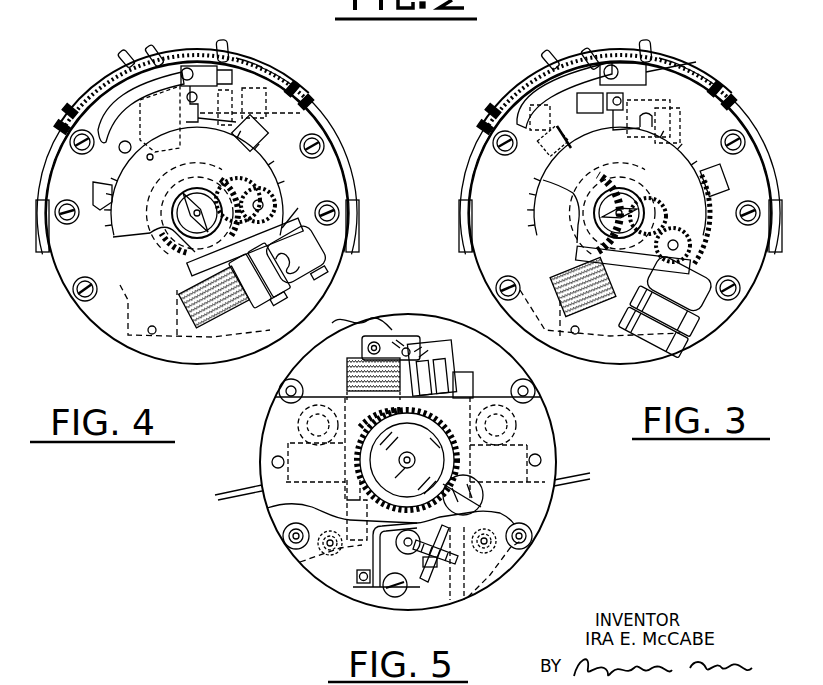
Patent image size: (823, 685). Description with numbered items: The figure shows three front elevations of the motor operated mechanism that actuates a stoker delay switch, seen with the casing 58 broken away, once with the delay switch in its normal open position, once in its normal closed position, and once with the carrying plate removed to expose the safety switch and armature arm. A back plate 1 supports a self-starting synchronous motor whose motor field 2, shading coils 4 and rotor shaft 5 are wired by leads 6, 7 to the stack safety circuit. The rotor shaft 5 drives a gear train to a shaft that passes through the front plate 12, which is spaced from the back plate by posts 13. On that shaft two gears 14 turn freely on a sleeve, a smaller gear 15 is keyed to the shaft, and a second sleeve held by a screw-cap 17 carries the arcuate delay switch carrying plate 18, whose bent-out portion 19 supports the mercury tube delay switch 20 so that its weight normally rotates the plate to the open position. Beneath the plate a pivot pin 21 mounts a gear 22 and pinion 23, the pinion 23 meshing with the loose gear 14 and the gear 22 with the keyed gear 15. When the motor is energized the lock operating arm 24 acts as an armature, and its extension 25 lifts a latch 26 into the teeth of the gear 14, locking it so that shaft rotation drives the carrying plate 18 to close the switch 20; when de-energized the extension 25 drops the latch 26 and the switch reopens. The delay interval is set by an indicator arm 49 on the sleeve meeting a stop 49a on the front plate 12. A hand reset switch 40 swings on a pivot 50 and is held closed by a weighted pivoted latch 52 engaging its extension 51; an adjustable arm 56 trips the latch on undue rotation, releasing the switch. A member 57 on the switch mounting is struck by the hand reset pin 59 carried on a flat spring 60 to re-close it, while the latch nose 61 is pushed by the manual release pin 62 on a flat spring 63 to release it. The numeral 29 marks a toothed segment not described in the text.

In FIG. 5, the back plate 1 is at (417, 330).
In FIG. 5, the motor field 2 is at (288, 443).
In FIG. 5, the shading coils 4 is at (312, 568).
In FIG. 5, the rotor shaft 5 is at (412, 550).
In FIG. 5, the lead 6 is at (250, 491).
In FIG. 5, the lead 7 is at (576, 479).
In FIG. 4, the front plate 12 is at (62, 270).
In FIG. 3, the front plate 12 is at (750, 250).
In FIG. 5, the front plate 12 is at (536, 427).
In FIG. 4, the posts 13 is at (76, 298).
In FIG. 3, the posts 13 is at (746, 141).
In FIG. 5, the posts 13 is at (284, 385).
In FIG. 4, the gears 14 is at (166, 256).
In FIG. 3, the gears 14 is at (590, 220).
In FIG. 5, the gears 14 is at (380, 428).
In FIG. 4, the gear 15 is at (140, 238).
In FIG. 3, the gear 15 is at (612, 193).
In FIG. 5, the gear 15 is at (398, 460).
In FIG. 4, the screw-cap 17 is at (176, 236).
In FIG. 3, the screw-cap 17 is at (606, 226).
In FIG. 4, the delay switch carrying plate 18 is at (265, 160).
In FIG. 3, the delay switch carrying plate 18 is at (682, 160).
In FIG. 3, the bent-out portion 19 is at (576, 262).
In FIG. 4, the mercury tube delay switch 20 is at (312, 260).
In FIG. 3, the mercury tube delay switch 20 is at (693, 313).
In FIG. 4, the pivot pin 21 is at (262, 205).
In FIG. 3, the pivot pin 21 is at (678, 246).
In FIG. 4, the gear 22 is at (289, 223).
In FIG. 3, the gear 22 is at (692, 264).
In FIG. 4, the pinion 23 is at (262, 185).
In FIG. 4, the lock operating arm 24 is at (194, 346).
In FIG. 3, the lock operating arm 24 is at (656, 358).
In FIG. 5, the lock operating arm 24 is at (386, 593).
In FIG. 5, the extension 25 is at (375, 560).
In FIG. 5, the latch 26 is at (484, 497).
In FIG. 3, the ratchet segment 29 is at (702, 222).
In FIG. 4, the hand reset switch 40 is at (302, 113).
In FIG. 3, the hand reset switch 40 is at (681, 130).
In FIG. 5, the hand reset switch 40 is at (464, 378).
In FIG. 4, the indicator arm 49 is at (100, 215).
In FIG. 3, the indicator arm 49 is at (552, 143).
In FIG. 4, the stop 49a is at (120, 150).
In FIG. 3, the stop 49a is at (540, 160).
In FIG. 5, the pivot 50 is at (364, 346).
In FIG. 3, the extension 51 is at (628, 106).
In FIG. 5, the extension 51 is at (420, 346).
In FIG. 3, the weighted pivoted latch 52 is at (540, 100).
In FIG. 3, the adjustable arm 56 is at (722, 176).
In FIG. 4, the member 57 is at (83, 100).
In FIG. 3, the member 57 is at (613, 50).
In FIG. 5, the member 57 is at (374, 320).
In FIG. 4, the casing 58 is at (181, 50).
In FIG. 3, the casing 58 is at (548, 72).
In FIG. 4, the hand reset pin 59 is at (124, 57).
In FIG. 3, the hand reset pin 59 is at (552, 52).
In FIG. 4, the flat spring 60 is at (153, 56).
In FIG. 3, the flat spring 60 is at (591, 56).
In FIG. 4, the nose 61 is at (247, 72).
In FIG. 3, the nose 61 is at (690, 70).
In FIG. 4, the manual release pin 62 is at (225, 40).
In FIG. 3, the manual release pin 62 is at (648, 42).
In FIG. 4, the flat spring 63 is at (240, 62).
In FIG. 3, the flat spring 63 is at (666, 60).